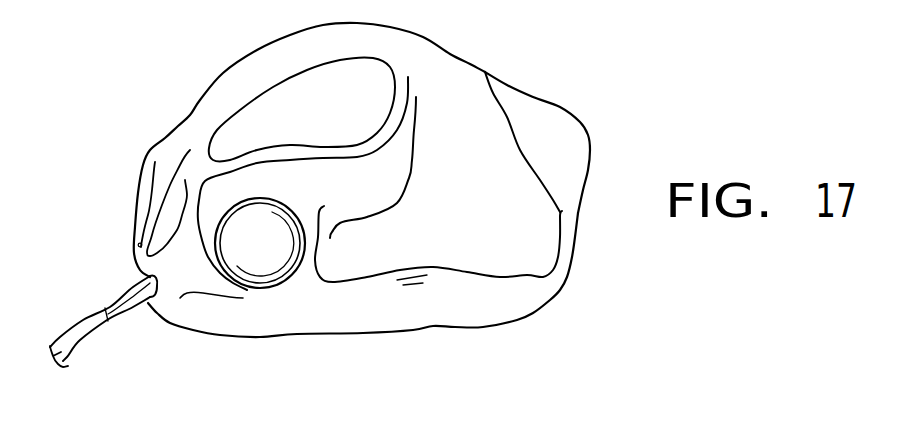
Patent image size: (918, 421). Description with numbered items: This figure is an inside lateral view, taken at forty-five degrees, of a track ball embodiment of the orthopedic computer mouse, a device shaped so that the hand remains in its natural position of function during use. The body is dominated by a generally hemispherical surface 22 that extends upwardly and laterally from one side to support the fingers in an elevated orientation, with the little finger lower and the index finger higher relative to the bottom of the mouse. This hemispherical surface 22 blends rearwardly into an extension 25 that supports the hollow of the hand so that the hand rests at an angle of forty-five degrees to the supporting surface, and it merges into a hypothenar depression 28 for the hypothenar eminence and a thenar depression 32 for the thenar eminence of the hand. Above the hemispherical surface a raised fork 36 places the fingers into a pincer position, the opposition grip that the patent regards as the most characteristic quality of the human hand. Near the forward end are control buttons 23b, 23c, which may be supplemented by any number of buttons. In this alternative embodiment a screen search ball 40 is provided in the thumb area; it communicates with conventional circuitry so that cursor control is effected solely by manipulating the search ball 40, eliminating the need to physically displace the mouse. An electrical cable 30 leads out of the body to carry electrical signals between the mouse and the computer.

The generally hemispherical surface 22 is at (457, 72).
The hypothenar depression 28 is at (553, 118).
The thenar depression 32 is at (537, 253).
The extension 25 is at (560, 211).
The raised fork 36 is at (265, 105).
The screen search ball 40 is at (245, 268).
The control button 23b is at (157, 192).
The control button 23c is at (157, 237).
The electrical cable 30 is at (90, 327).